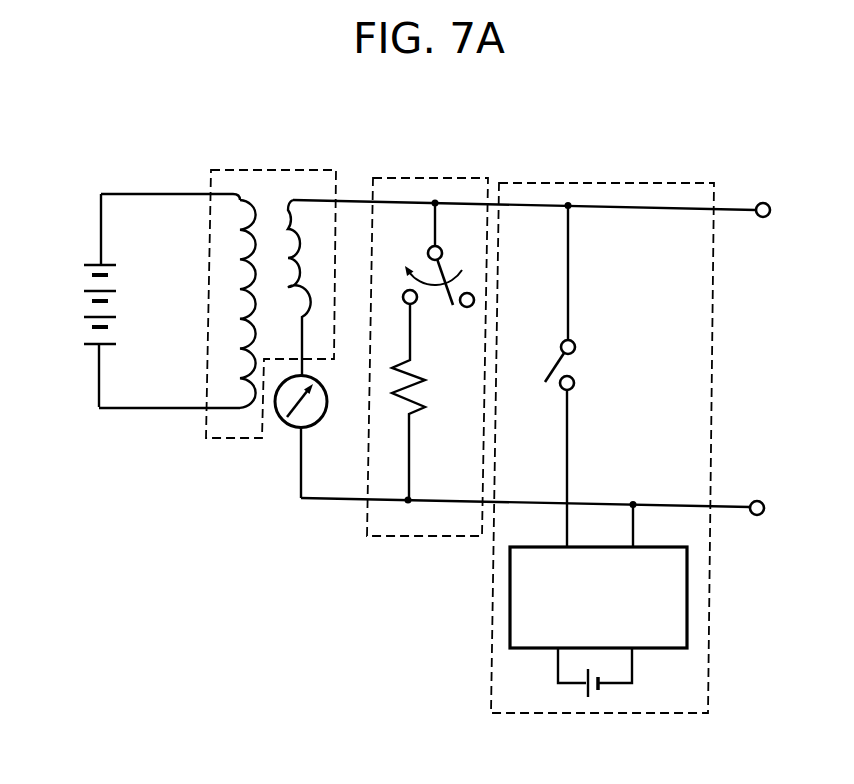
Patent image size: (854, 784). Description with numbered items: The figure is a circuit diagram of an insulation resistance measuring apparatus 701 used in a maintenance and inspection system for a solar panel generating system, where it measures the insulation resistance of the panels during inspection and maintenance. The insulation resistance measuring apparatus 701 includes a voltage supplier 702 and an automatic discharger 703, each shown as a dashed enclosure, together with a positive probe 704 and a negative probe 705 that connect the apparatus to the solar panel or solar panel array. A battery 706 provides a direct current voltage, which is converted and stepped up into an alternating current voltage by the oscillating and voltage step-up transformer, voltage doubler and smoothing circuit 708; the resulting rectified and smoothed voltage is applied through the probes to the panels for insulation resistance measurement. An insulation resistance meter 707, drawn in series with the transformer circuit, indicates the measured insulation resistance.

The insulation resistance measuring apparatus 701 is at (341, 581).
The voltage supplier 702 is at (585, 182).
The automatic discharger 703 is at (415, 178).
The positive probe 704 is at (767, 200).
The negative probe 705 is at (761, 499).
The battery 706 is at (82, 258).
The insulation resistance meter 707 is at (290, 433).
The oscillating and voltage step-up transformer, voltage doubler and smoothing circu 708 is at (258, 168).